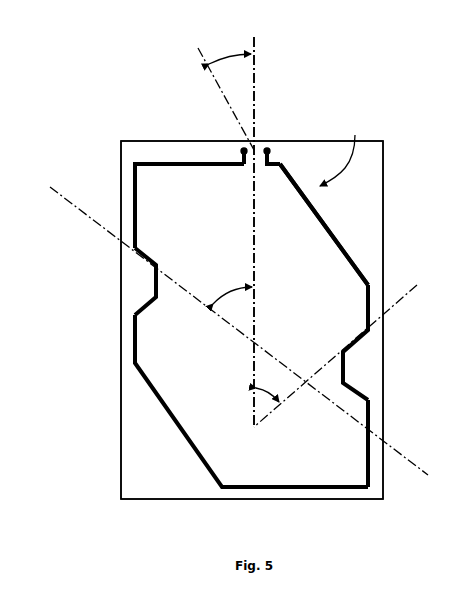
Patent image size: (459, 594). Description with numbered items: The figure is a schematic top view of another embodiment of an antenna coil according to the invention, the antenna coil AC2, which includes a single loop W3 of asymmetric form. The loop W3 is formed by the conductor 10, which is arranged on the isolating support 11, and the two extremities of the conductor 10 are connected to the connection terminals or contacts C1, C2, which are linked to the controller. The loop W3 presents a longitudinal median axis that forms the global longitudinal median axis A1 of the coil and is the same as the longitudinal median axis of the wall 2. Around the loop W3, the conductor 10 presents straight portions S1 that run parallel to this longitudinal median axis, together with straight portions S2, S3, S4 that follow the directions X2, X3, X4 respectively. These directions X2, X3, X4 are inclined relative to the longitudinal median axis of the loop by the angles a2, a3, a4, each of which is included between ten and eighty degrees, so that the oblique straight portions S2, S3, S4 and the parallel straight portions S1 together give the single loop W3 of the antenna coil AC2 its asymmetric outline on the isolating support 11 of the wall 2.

The wall 2 is at (121, 333).
The isolating support 11 is at (252, 320).
The conductor 10 is at (256, 307).
The straight portions S1 is at (135, 192).
The straight portion S2 is at (168, 418).
The straight portion S3 is at (142, 259).
The straight portion S4 is at (353, 343).
The single loop W3 is at (357, 263).
The connection contact C1 is at (242, 151).
The connection contact C2 is at (268, 150).
The global longitudinal median axis A1 is at (255, 90).
The direction X2 is at (216, 93).
The direction X3 is at (229, 323).
The direction X4 is at (349, 347).
The angle a2 is at (229, 42).
The angle a3 is at (232, 286).
The angle a4 is at (269, 385).
The antenna coil AC2 is at (343, 151).